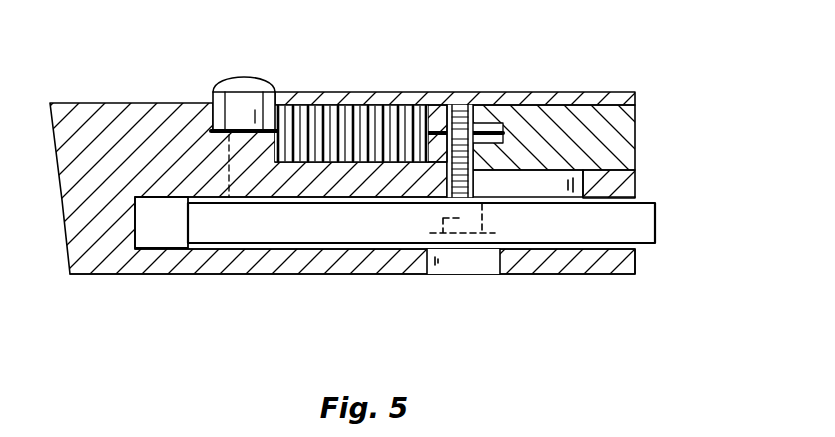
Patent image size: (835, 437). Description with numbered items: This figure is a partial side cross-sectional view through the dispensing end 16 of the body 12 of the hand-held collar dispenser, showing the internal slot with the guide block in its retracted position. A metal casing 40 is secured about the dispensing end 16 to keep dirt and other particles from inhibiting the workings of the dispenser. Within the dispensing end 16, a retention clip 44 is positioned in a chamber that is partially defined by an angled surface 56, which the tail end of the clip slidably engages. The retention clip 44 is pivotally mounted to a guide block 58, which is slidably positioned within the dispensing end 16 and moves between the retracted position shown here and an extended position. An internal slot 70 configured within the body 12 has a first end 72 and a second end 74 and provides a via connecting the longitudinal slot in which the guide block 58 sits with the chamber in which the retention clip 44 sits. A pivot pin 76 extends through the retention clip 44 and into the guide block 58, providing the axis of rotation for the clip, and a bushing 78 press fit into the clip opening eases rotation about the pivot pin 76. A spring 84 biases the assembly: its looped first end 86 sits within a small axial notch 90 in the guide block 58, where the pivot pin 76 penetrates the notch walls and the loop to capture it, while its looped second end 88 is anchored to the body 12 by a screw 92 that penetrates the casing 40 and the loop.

The body 12 is at (90, 128).
The dispensing end 16 is at (583, 275).
The casing 40 is at (313, 92).
The retention clip 44 is at (608, 218).
The angled surface 56 is at (152, 222).
The guide block 58 is at (608, 137).
The internal slot 70 is at (527, 185).
The first end 72 is at (402, 193).
The second end 74 is at (590, 184).
The pivot pin 76 is at (452, 105).
The bushing 78 is at (445, 218).
The spring 84 is at (342, 112).
The first end 86 is at (440, 125).
The second end 88 is at (215, 140).
The axial notch 90 is at (505, 133).
The screw 92 is at (235, 78).